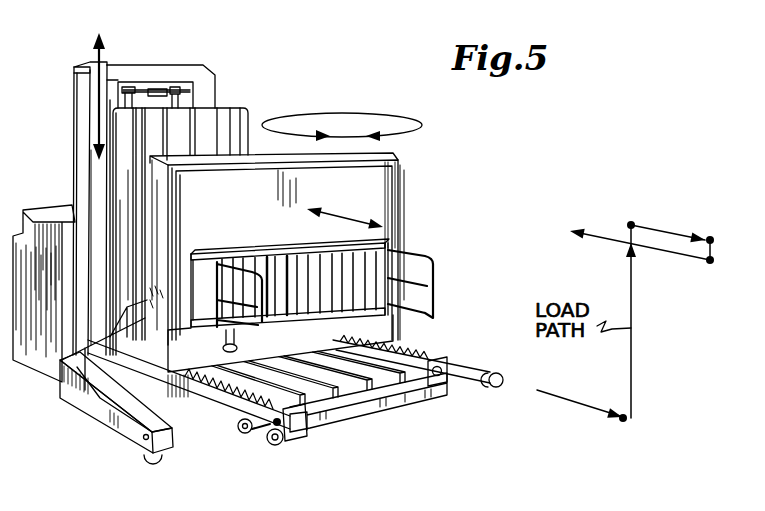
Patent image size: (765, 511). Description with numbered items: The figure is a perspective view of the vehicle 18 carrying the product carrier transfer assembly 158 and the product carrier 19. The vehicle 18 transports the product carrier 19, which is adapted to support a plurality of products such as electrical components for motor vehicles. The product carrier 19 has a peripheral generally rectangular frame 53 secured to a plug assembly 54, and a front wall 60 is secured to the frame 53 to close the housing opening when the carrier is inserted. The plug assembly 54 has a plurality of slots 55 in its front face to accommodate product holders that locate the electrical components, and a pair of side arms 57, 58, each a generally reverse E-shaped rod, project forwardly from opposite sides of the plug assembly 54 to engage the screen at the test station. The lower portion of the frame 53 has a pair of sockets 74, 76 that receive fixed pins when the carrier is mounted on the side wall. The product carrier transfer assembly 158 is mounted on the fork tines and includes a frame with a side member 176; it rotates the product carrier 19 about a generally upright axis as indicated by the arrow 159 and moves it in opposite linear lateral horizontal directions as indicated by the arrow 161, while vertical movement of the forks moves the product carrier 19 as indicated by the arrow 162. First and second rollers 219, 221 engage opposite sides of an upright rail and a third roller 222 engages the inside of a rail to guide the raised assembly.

The vehicle 18 is at (43, 183).
The arrow indicating vertical movement 162 is at (100, 78).
The arrow indicating rotation 159 is at (340, 108).
The product carrier 19 is at (410, 172).
The front wall 60 is at (283, 252).
The frame 53 is at (398, 206).
The arrow indicating lateral movement 161 is at (344, 211).
The plug assembly 54 is at (318, 250).
The slots 55 is at (317, 265).
The side arm 57 is at (243, 262).
The side arm 58 is at (422, 250).
The socket 74 is at (223, 348).
The socket 76 is at (340, 331).
The side member 176 is at (212, 403).
The first roller 219 is at (246, 434).
The second roller 221 is at (276, 446).
The third roller 222 is at (258, 433).
The product carrier transfer assembly 158 is at (312, 444).